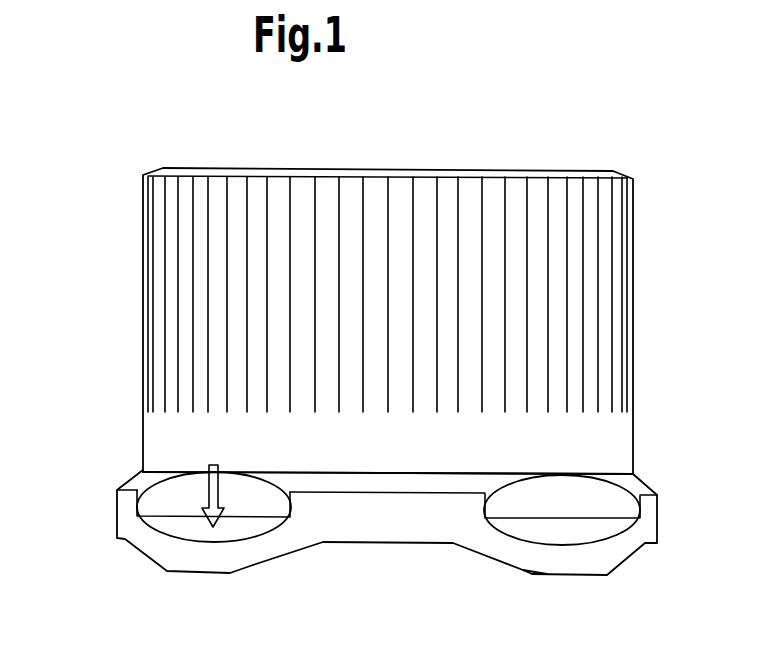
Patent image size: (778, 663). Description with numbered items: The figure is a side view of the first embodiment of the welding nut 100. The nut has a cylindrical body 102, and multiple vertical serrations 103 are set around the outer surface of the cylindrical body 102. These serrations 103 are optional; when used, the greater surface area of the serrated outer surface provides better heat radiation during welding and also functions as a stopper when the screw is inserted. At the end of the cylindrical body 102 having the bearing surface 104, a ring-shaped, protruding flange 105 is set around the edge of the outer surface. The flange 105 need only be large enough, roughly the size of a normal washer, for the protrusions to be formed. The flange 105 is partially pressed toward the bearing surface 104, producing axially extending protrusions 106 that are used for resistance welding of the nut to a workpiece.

The welding nut 100 is at (560, 158).
The cylindrical body 102 is at (637, 246).
The vertical serrations 103 is at (163, 210).
The bearing surface 104 is at (390, 545).
The protruding flange 105 is at (132, 484).
The protrusions 106 is at (181, 568).